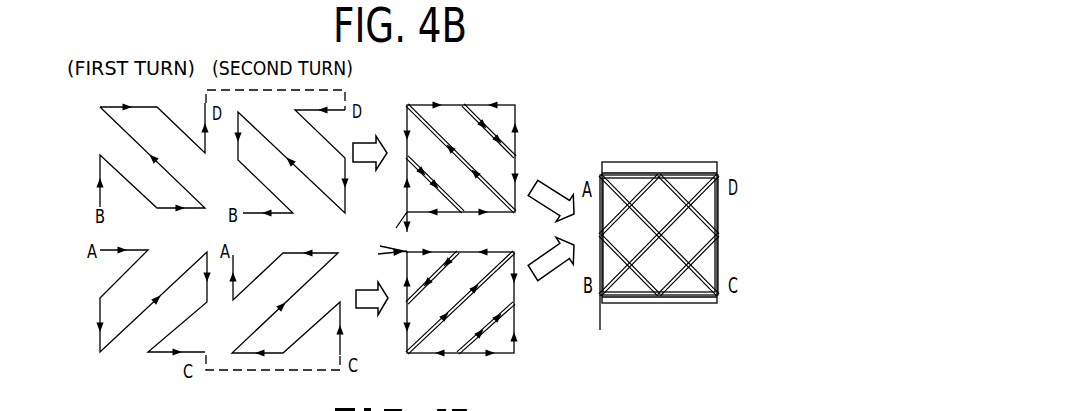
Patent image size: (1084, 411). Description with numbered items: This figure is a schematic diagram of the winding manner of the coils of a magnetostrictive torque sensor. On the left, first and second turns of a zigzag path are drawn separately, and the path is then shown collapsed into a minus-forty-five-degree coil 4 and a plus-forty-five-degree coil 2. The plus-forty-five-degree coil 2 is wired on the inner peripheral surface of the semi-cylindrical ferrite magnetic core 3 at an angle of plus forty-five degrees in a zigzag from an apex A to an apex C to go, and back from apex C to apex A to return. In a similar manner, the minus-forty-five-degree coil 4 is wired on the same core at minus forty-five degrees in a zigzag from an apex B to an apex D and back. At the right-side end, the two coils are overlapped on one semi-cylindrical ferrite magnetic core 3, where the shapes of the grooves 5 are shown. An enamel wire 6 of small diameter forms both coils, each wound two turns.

The +45° coil 2 is at (457, 337).
The semi-cylindrical ferrite magnetic core 3 is at (620, 165).
The −45° coil 4 is at (455, 122).
The groove 5 is at (687, 175).
The enamel wire 6 is at (647, 177).